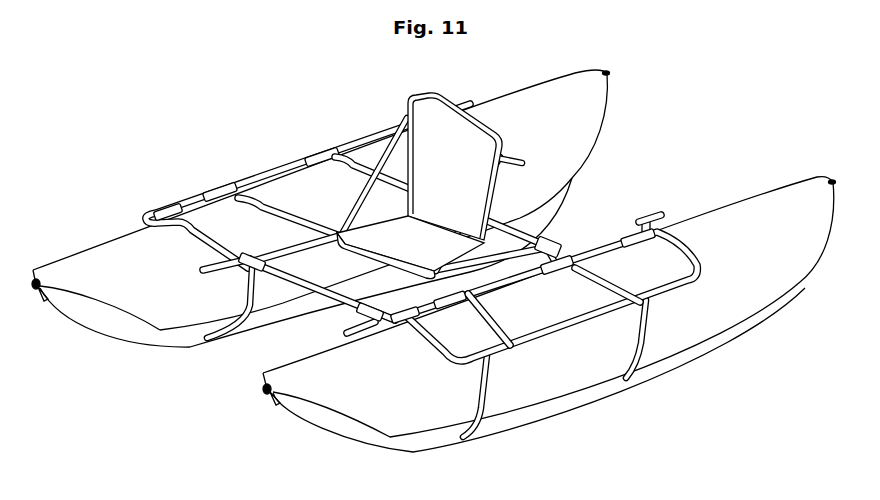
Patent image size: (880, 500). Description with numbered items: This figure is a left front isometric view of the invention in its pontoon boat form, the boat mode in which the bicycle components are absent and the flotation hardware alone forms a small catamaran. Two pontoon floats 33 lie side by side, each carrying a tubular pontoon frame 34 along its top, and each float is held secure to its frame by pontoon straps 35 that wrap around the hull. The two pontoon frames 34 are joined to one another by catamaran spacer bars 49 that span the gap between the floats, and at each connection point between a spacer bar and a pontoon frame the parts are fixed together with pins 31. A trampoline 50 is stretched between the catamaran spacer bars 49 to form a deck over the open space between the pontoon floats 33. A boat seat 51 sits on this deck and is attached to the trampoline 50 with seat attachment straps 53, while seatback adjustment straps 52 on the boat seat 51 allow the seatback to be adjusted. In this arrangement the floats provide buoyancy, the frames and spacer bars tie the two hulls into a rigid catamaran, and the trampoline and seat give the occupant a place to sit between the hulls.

The pin 31 is at (551, 243).
The pontoon float 33 is at (760, 213).
The pontoon frame 34 is at (668, 234).
The pontoon strap 35 is at (646, 362).
The catamaran spacer bar 49 is at (328, 304).
The trampoline 50 is at (330, 276).
The boat seat 51 is at (453, 136).
The seatback adjustment strap 52 is at (378, 160).
The seat attachment strap 53 is at (366, 276).